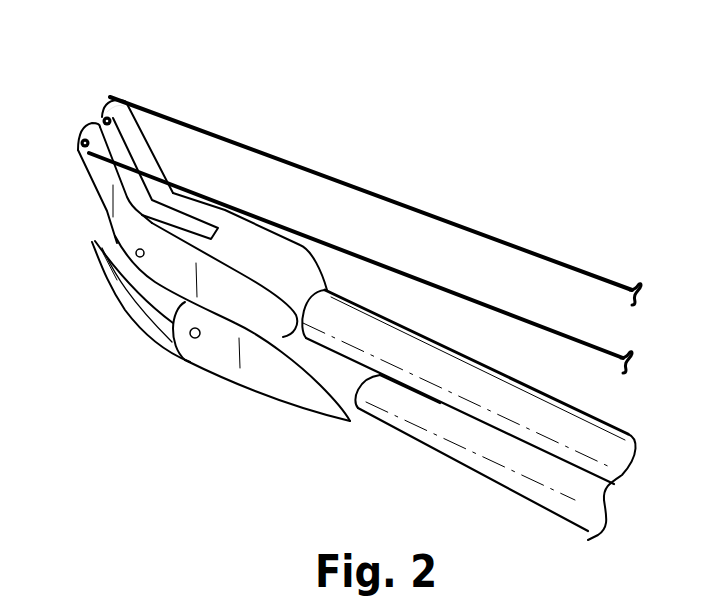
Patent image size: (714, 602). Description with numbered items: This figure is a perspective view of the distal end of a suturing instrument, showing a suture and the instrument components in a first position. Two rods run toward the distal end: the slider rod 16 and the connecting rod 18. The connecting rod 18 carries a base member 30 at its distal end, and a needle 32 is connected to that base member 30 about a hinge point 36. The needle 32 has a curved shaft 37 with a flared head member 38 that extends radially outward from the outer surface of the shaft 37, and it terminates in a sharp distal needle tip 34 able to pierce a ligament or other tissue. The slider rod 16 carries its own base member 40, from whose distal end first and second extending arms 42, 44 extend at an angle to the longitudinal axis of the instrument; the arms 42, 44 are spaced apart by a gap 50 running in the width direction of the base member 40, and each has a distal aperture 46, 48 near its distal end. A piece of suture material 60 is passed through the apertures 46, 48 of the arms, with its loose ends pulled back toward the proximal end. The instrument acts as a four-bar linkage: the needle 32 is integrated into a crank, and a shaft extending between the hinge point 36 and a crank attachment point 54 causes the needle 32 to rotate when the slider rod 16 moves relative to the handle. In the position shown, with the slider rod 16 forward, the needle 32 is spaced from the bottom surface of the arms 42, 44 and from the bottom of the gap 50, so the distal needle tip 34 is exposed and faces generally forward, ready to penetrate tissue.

The slider rod 16 is at (448, 373).
The connecting rod 18 is at (431, 428).
The base member 30 is at (251, 372).
The needle 32 is at (110, 307).
The distal needle tip 34 is at (92, 243).
The hinge point 36 is at (195, 339).
The curved shaft 37 is at (115, 302).
The flared head member 38 is at (102, 268).
The base member 40 is at (281, 270).
The first extending arm 42 is at (84, 130).
The second extending arm 44 is at (108, 212).
The distal aperture 46 is at (80, 145).
The distal aperture 48 is at (111, 117).
The gap 50 is at (101, 118).
The crank attachment point 54 is at (136, 253).
The suture material 60 is at (473, 228).